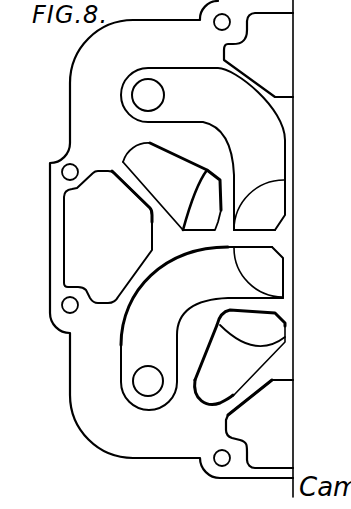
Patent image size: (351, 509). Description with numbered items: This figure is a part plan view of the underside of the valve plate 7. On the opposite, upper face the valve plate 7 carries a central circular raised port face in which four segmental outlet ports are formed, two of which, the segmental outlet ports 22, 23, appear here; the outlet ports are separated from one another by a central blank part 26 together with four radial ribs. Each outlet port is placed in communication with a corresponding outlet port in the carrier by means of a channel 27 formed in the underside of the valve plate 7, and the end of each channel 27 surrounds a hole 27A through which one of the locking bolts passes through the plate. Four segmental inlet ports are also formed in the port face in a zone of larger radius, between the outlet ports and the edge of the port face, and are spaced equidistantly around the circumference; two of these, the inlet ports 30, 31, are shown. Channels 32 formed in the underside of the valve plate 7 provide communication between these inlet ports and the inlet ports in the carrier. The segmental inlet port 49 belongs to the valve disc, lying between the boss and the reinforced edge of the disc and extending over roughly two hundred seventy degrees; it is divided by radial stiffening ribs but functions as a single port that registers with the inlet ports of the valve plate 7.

The valve plate 7 is at (85, 115).
The segmental outlet port 22 is at (272, 203).
The segmental outlet port 23 is at (270, 278).
The central blank part 26 is at (278, 241).
The channel 27 is at (105, 354).
The hole 27A is at (150, 97).
The segmental inlet port 30 is at (205, 192).
The segmental inlet port 31 is at (272, 335).
The channel 32 is at (160, 158).
The segmental inlet port 49 is at (343, 246).